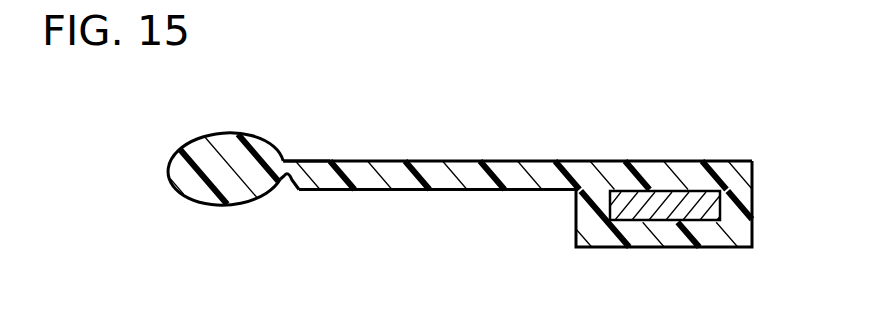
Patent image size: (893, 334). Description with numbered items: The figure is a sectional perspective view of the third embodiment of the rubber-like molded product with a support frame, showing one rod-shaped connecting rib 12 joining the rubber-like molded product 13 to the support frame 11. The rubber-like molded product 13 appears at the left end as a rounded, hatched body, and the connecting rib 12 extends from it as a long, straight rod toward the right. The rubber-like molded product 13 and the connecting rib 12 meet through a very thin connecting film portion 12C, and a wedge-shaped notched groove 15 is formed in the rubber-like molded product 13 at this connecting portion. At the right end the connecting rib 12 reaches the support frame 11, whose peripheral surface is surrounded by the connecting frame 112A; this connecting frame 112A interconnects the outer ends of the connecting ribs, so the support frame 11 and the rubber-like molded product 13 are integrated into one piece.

The support frame 11 is at (708, 203).
The connecting rib 12 is at (520, 160).
The connecting film portion 12C is at (290, 161).
The rubber-like molded product 13 is at (236, 192).
The wedge-shaped notched groove 15 is at (292, 183).
The connecting frame 112A is at (724, 162).